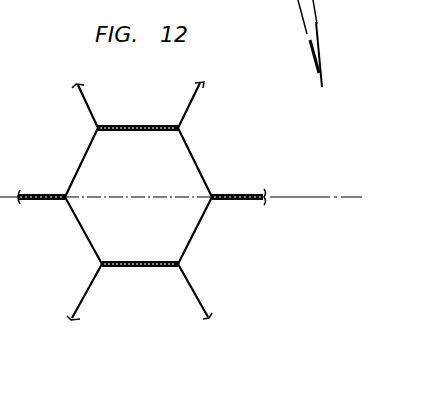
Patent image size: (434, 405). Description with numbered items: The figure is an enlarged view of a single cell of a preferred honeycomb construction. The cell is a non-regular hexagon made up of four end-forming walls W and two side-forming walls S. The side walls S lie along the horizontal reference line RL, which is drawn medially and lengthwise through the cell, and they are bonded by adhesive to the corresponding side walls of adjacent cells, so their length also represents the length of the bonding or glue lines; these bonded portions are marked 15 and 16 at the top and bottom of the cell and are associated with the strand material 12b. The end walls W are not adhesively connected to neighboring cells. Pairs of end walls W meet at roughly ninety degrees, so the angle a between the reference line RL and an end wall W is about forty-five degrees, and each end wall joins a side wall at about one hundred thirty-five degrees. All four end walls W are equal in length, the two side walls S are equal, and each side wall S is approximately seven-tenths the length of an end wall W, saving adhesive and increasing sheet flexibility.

The strand segment 12b is at (133, 125).
The upper bonded strand portion 15 is at (143, 131).
The lower bonded strand portion 16 is at (125, 261).
The side-forming wall S is at (115, 280).
The end-forming wall W is at (139, 201).
The angle between RL and W a is at (182, 246).
The reference line RL is at (316, 188).